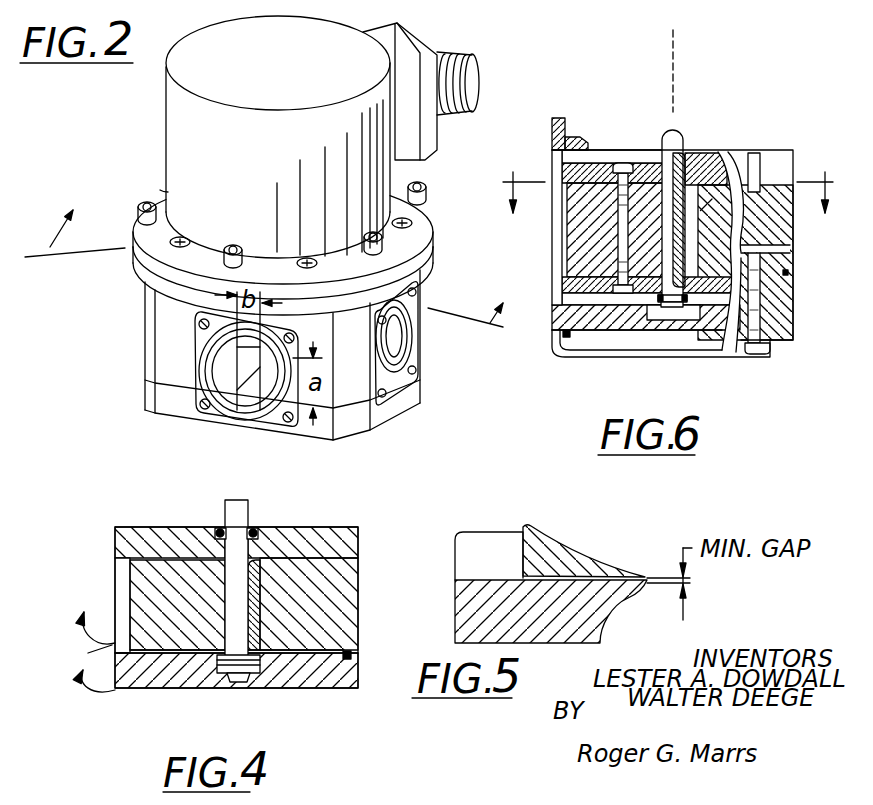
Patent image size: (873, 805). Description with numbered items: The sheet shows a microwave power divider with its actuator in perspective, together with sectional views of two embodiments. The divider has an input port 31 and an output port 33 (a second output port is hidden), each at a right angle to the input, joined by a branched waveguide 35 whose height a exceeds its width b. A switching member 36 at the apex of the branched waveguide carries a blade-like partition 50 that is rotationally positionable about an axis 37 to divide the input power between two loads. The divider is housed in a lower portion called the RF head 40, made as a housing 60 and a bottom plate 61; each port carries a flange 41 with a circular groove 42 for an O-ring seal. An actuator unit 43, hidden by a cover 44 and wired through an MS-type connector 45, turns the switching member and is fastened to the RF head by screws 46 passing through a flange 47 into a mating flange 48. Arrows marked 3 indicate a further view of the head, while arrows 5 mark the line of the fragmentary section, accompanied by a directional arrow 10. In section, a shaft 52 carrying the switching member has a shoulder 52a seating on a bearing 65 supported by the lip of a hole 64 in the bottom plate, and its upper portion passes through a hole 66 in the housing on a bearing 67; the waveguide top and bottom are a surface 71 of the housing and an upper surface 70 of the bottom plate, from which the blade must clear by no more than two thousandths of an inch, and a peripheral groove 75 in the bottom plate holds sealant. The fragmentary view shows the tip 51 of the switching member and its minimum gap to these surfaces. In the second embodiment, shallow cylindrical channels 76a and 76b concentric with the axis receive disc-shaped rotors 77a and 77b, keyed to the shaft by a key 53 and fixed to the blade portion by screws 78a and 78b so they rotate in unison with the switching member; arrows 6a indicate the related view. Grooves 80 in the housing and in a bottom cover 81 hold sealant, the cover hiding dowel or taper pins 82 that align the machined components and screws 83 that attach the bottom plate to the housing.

In FIG. 2, the section line 3- 3 is at (264, 282).
In FIG. 4, the view direction arrow 5 is at (92, 641).
In FIG. 4, the valve assembly 10 is at (78, 680).
In FIG. 2, the input port 31 is at (253, 393).
In FIG. 2, the output port 33 is at (395, 349).
In FIG. 4, the branched waveguide 35 is at (118, 587).
In FIG. 5, the branched waveguide 35 is at (470, 548).
In FIG. 6, the switching member 36 is at (745, 158).
In FIG. 4, the switching member 36 is at (278, 580).
In FIG. 5, the switching member 36 is at (570, 550).
In FIG. 6, the axis 37 is at (678, 54).
In FIG. 2, the RF head 40 is at (97, 440).
In FIG. 2, the flange 41 is at (396, 382).
In FIG. 2, the circular groove 42 is at (207, 366).
In FIG. 2, the actuator unit 43 is at (97, 78).
In FIG. 2, the cover 44 is at (278, 63).
In FIG. 2, the MS-type connector 45 is at (447, 52).
In FIG. 2, the screws 46 is at (212, 212).
In FIG. 2, the flange 47 is at (413, 243).
In FIG. 2, the mating flange 48 is at (418, 262).
In FIG. 6, the blade-like partition 50 is at (590, 247).
In FIG. 5, the blade-like partition 50 is at (533, 542).
In FIG. 6, the tip 51 is at (587, 240).
In FIG. 5, the tip 51 is at (507, 532).
In FIG. 6, the shaft 52 is at (674, 146).
In FIG. 4, the shaft 52 is at (245, 500).
In FIG. 4, the shoulder 52a is at (217, 661).
In FIG. 6, the key 53 is at (694, 162).
In FIG. 2, the housing 60 is at (222, 352).
In FIG. 6, the housing 60 is at (552, 152).
In FIG. 4, the housing 60 is at (330, 613).
In FIG. 2, the bottom plate 61 is at (212, 390).
In FIG. 6, the bottom plate 61 is at (560, 333).
In FIG. 4, the bottom plate 61 is at (353, 686).
In FIG. 5, the bottom plate 61 is at (533, 627).
In FIG. 6, the section line 6a- 6a is at (666, 181).
In FIG. 4, the hole 64 is at (243, 682).
In FIG. 4, the bearing 65 is at (221, 672).
In FIG. 4, the hole 66 is at (213, 530).
In FIG. 4, the bearing 67 is at (254, 533).
In FIG. 5, the upper surface 70 is at (470, 577).
In FIG. 4, the surface 71 is at (117, 568).
In FIG. 4, the peripheral groove 75 is at (350, 656).
In FIG. 6, the shallow cylindrical channel 76a is at (640, 152).
In FIG. 6, the shallow cylindrical channel 76b is at (573, 298).
In FIG. 6, the disc-shaped rotor 77a is at (593, 167).
In FIG. 6, the disc-shaped rotor 77b is at (568, 282).
In FIG. 6, the screw 78a is at (623, 168).
In FIG. 6, the screw 78b is at (618, 300).
In FIG. 6, the grooves 80 is at (553, 140).
In FIG. 6, the bottom cover 81 is at (627, 355).
In FIG. 6, the dowel or taper pins 82 is at (782, 258).
In FIG. 6, the screws 83 is at (755, 354).